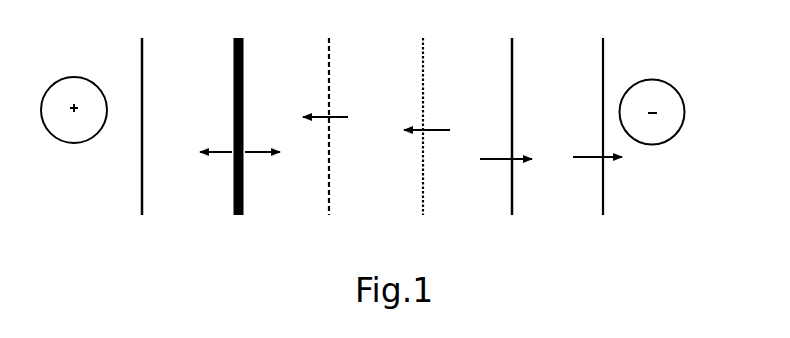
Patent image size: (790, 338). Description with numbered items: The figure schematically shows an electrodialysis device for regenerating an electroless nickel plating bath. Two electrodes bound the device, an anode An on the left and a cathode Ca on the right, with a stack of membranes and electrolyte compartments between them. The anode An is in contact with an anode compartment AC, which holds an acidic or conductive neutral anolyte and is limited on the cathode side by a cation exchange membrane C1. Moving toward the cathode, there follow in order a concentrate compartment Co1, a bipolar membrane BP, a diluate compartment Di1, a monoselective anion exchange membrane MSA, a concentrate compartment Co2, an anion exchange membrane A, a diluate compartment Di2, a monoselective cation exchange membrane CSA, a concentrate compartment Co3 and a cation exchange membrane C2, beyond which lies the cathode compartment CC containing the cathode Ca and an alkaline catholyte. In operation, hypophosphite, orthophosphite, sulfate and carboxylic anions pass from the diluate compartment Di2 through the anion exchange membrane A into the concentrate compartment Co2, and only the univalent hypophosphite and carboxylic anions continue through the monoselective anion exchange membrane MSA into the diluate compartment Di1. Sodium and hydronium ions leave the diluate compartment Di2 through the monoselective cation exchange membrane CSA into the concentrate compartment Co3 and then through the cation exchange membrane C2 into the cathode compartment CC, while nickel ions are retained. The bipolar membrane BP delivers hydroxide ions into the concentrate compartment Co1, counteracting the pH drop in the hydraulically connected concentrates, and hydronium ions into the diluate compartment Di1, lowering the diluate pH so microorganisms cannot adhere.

The cation exchange membrane C1 is at (142, 109).
The bipolar membrane BP is at (237, 109).
The monoselective anion exchange membrane MSA is at (329, 110).
The anion exchange membrane A is at (423, 109).
The monoselective cation exchange membrane CSA is at (514, 110).
The cation exchange membrane C2 is at (598, 109).
The anode An is at (89, 77).
The cathode Ca is at (646, 79).
The anode compartment AC is at (75, 112).
The cathode compartment CC is at (626, 117).
The concentrate compartment Co1 is at (190, 119).
The diluate compartment Di1 is at (274, 136).
The concentrate compartment Co2 is at (343, 96).
The diluate compartment Di2 is at (447, 126).
The concentrate compartment Co3 is at (522, 123).